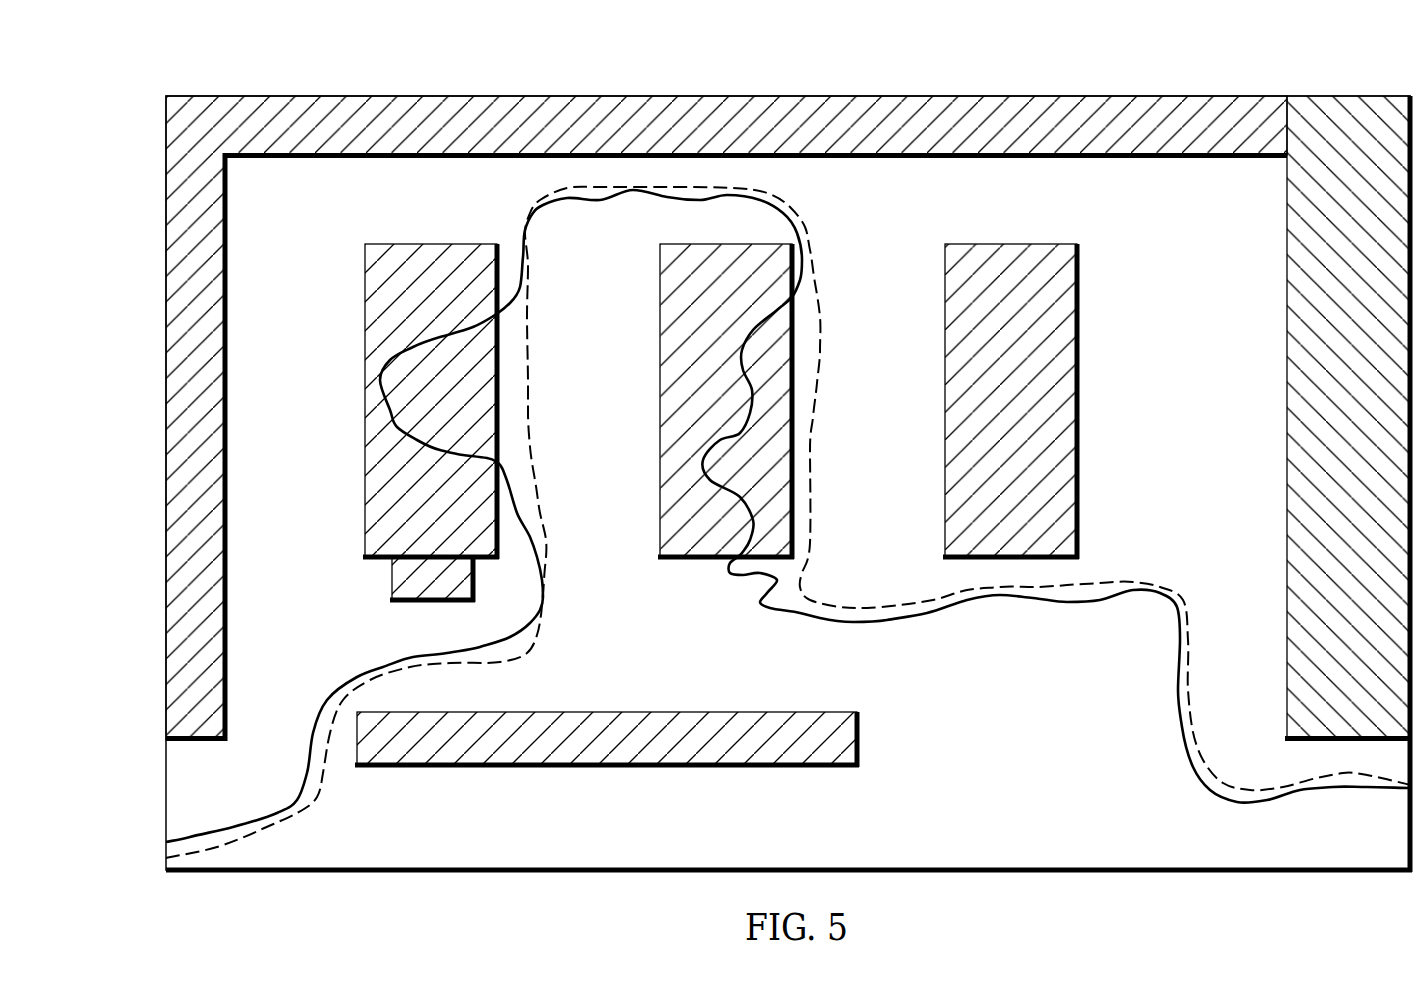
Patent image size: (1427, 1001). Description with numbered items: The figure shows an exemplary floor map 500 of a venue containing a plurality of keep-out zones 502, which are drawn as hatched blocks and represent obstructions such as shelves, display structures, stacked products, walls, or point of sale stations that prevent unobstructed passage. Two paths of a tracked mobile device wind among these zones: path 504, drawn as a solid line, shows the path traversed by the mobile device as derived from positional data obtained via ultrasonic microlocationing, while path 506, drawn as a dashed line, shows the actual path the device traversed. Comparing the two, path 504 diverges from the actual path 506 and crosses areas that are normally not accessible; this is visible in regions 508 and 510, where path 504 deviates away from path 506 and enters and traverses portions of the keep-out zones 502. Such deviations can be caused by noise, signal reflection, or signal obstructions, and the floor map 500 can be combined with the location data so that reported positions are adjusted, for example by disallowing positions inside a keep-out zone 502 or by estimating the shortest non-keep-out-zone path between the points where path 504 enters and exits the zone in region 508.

The floor map 500 is at (140, 58).
The keep-out zones 502 is at (835, 125).
The path 504 is at (1202, 783).
The actual path 506 is at (1183, 602).
The region 508 is at (617, 288).
The region 510 is at (330, 252).